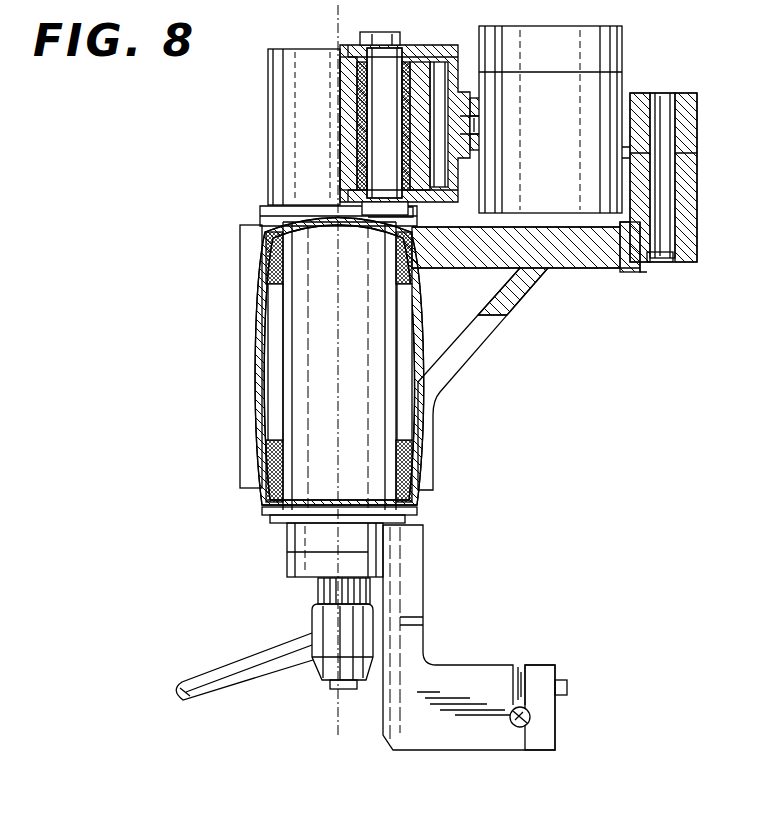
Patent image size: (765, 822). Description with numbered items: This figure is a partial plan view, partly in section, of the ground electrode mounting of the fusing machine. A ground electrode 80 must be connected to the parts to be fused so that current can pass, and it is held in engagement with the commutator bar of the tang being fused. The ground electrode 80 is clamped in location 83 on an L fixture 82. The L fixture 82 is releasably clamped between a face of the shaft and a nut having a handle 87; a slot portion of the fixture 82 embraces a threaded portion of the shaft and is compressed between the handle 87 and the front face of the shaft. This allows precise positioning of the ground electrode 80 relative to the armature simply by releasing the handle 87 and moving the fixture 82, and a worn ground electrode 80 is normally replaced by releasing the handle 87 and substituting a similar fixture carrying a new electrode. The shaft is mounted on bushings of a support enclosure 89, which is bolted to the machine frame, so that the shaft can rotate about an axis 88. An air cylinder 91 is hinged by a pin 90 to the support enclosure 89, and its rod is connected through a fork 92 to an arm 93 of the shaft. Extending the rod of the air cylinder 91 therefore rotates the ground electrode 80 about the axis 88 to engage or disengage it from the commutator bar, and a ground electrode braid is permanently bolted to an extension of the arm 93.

The ground electrode 80 is at (530, 714).
The L fixture 82 is at (460, 670).
The location 83 is at (570, 658).
The handle 87 is at (323, 623).
The axis 88 is at (336, 30).
The support enclosure 89 is at (248, 405).
The pin 90 is at (664, 258).
The air cylinder 91 is at (622, 45).
The fork 92 is at (418, 45).
The arm 93 is at (345, 123).